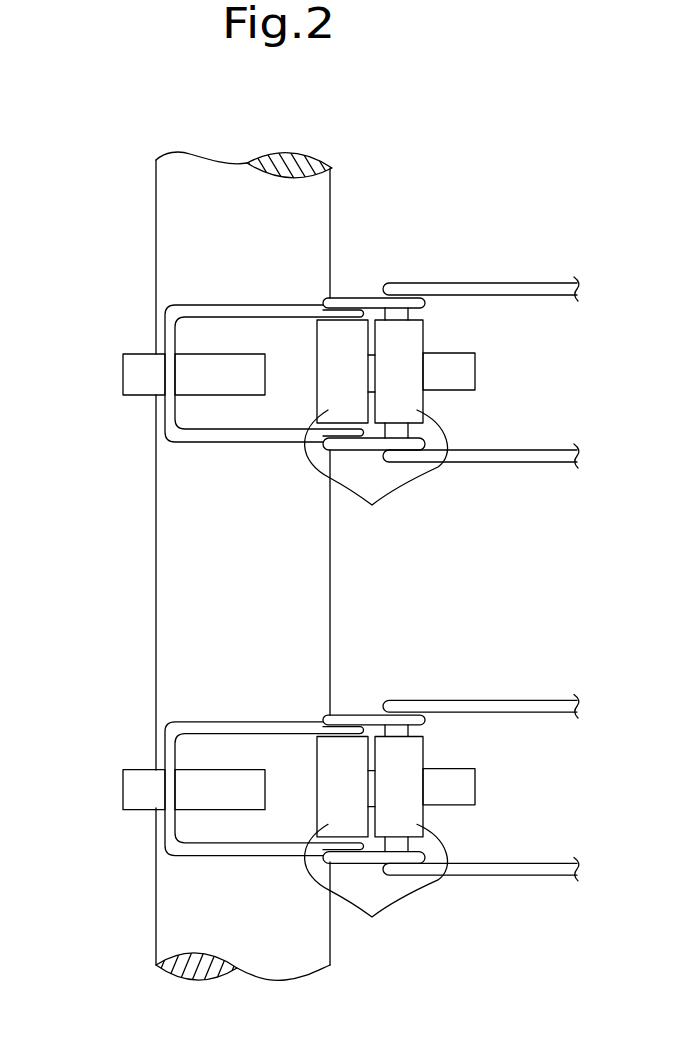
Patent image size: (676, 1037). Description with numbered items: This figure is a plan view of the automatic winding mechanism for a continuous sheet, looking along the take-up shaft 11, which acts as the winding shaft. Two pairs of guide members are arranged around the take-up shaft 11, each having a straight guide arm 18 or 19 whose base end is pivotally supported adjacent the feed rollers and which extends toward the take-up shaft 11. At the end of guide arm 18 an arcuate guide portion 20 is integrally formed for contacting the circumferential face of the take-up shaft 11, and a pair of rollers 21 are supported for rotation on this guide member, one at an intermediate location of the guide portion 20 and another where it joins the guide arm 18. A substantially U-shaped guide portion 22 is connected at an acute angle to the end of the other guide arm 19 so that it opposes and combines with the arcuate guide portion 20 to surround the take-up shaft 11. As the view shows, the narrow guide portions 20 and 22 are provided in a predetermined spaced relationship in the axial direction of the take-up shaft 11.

The take-up shaft 11 is at (155, 618).
The guide arm 18 is at (520, 460).
The guide arm 19 is at (467, 371).
The guide portion 20 is at (283, 305).
The rollers 21 is at (376, 629).
The guide portion 22 is at (128, 372).